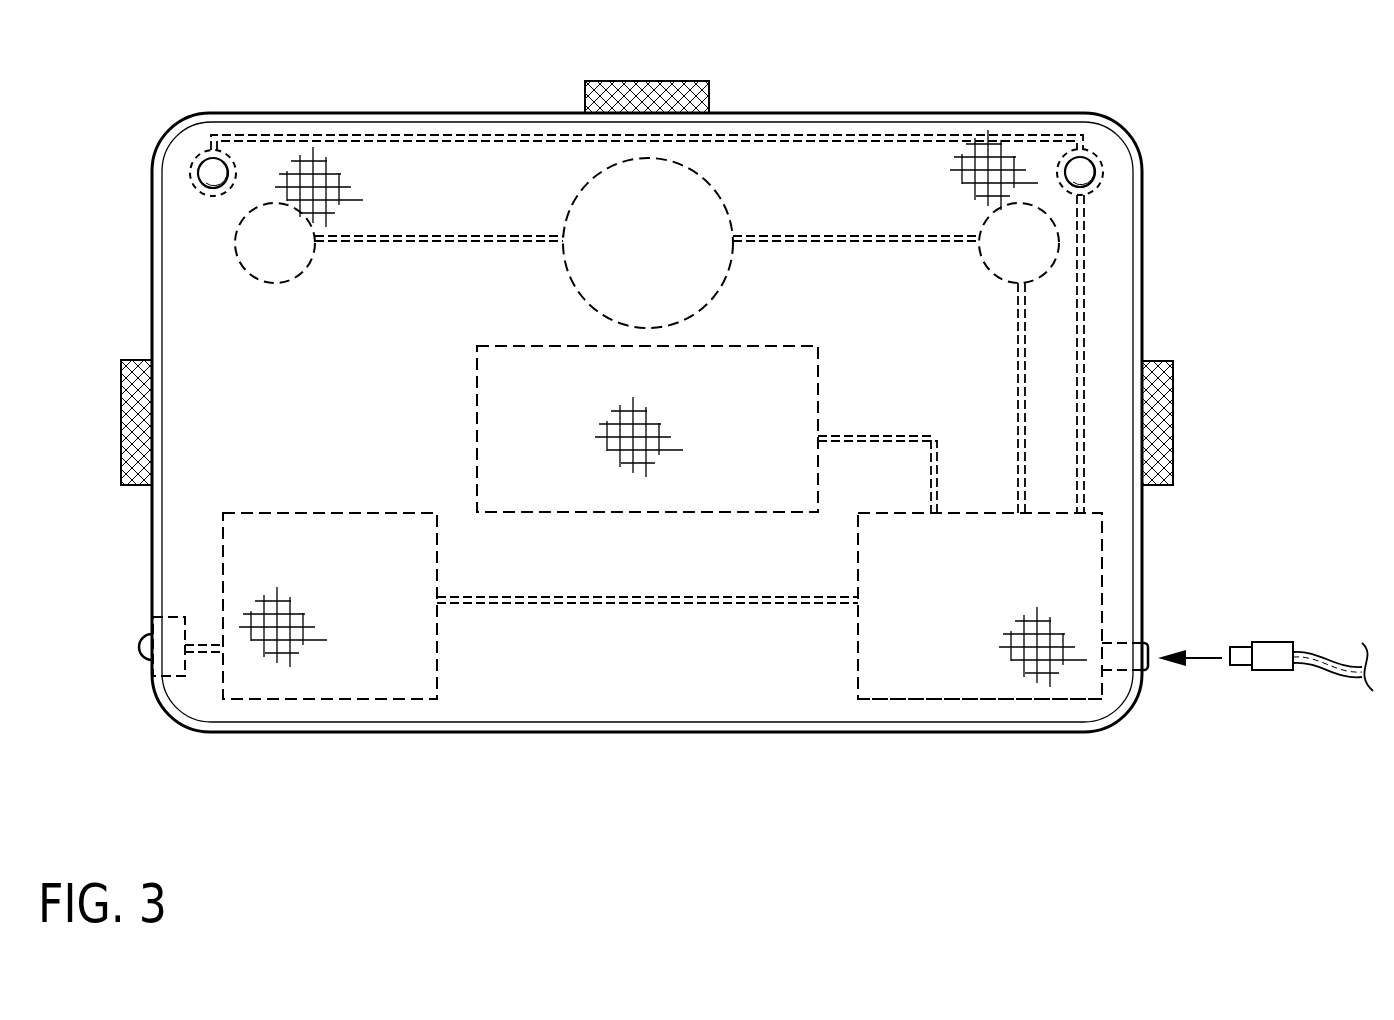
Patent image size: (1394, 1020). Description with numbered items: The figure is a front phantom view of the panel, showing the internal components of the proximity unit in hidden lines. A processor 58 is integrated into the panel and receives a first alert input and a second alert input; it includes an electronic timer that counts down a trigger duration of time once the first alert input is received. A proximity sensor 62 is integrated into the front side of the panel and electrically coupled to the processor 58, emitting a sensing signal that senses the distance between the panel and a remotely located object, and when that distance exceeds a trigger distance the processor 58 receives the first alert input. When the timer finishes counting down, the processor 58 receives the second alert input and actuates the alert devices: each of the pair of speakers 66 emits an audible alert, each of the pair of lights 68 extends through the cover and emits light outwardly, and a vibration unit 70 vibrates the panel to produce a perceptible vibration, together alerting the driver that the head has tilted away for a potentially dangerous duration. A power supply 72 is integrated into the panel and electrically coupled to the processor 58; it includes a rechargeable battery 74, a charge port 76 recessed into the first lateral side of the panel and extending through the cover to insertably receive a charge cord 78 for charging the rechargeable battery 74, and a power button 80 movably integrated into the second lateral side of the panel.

The processor 58 is at (437, 672).
The proximity sensor 62 is at (773, 346).
The pair of speakers 66 is at (273, 204).
The pair of lights 68 is at (208, 155).
The vibration unit 70 is at (575, 202).
The power supply 72 is at (985, 740).
The rechargeable battery 74 is at (908, 700).
The charge port 76 is at (1125, 673).
The charge cord 78 is at (1270, 642).
The power button 80 is at (139, 640).